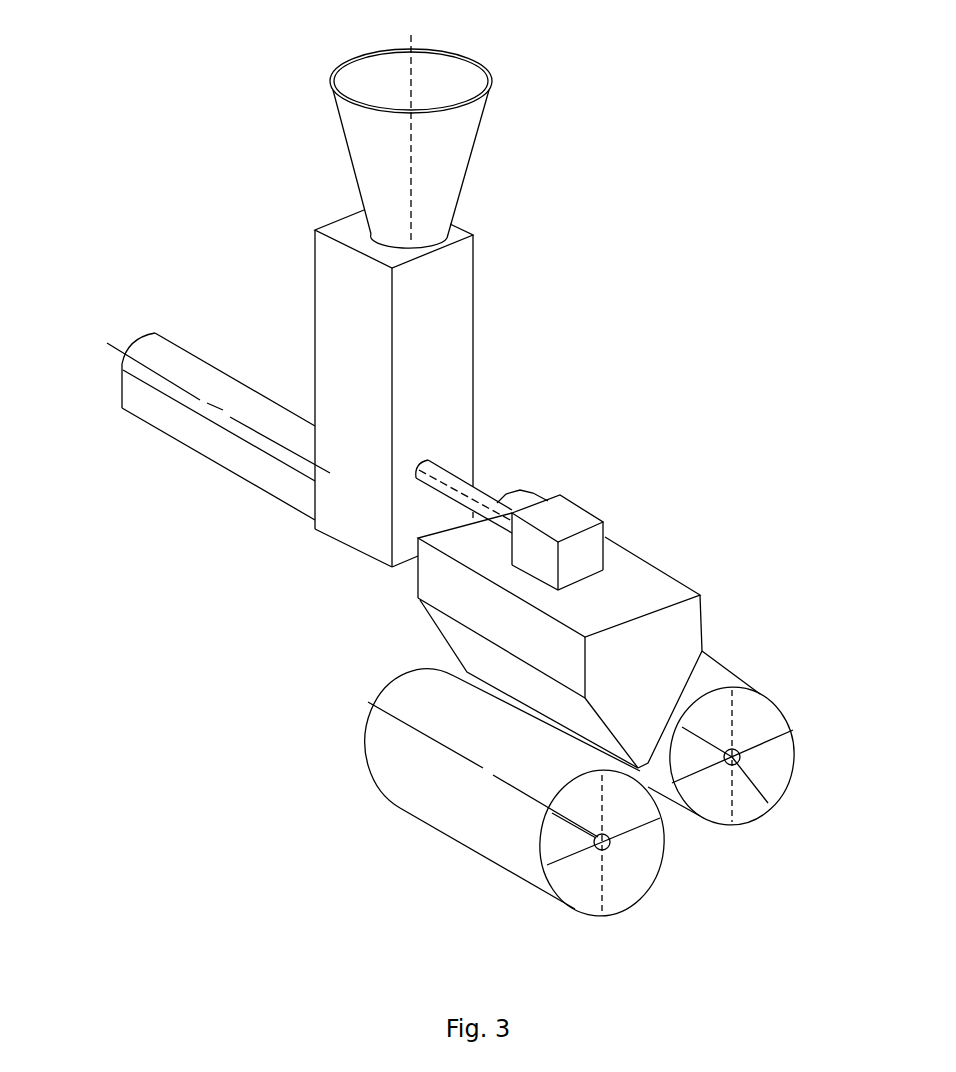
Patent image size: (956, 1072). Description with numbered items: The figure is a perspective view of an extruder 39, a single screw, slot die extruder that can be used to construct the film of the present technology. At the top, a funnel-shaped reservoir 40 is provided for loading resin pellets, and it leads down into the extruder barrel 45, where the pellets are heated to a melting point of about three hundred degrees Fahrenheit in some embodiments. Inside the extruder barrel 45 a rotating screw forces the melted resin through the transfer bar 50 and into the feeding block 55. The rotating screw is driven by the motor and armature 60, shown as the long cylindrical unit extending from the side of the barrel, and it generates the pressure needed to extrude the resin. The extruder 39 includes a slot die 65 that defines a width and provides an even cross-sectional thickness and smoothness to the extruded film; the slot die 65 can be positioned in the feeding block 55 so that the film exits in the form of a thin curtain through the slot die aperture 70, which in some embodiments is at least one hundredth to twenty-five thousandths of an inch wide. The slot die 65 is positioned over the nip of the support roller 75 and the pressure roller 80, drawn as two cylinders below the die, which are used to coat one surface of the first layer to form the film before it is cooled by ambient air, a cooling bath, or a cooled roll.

The extruder 39 is at (130, 105).
The reservoir 40 is at (448, 173).
The extruder barrel 45 is at (458, 333).
The transfer bar 50 is at (480, 490).
The feeding block 55 is at (583, 508).
The motor and armature 60 is at (238, 380).
The slot die 65 is at (706, 620).
The slot die aperture 70 is at (650, 738).
The support roller 75 is at (528, 847).
The pressure roller 80 is at (729, 748).